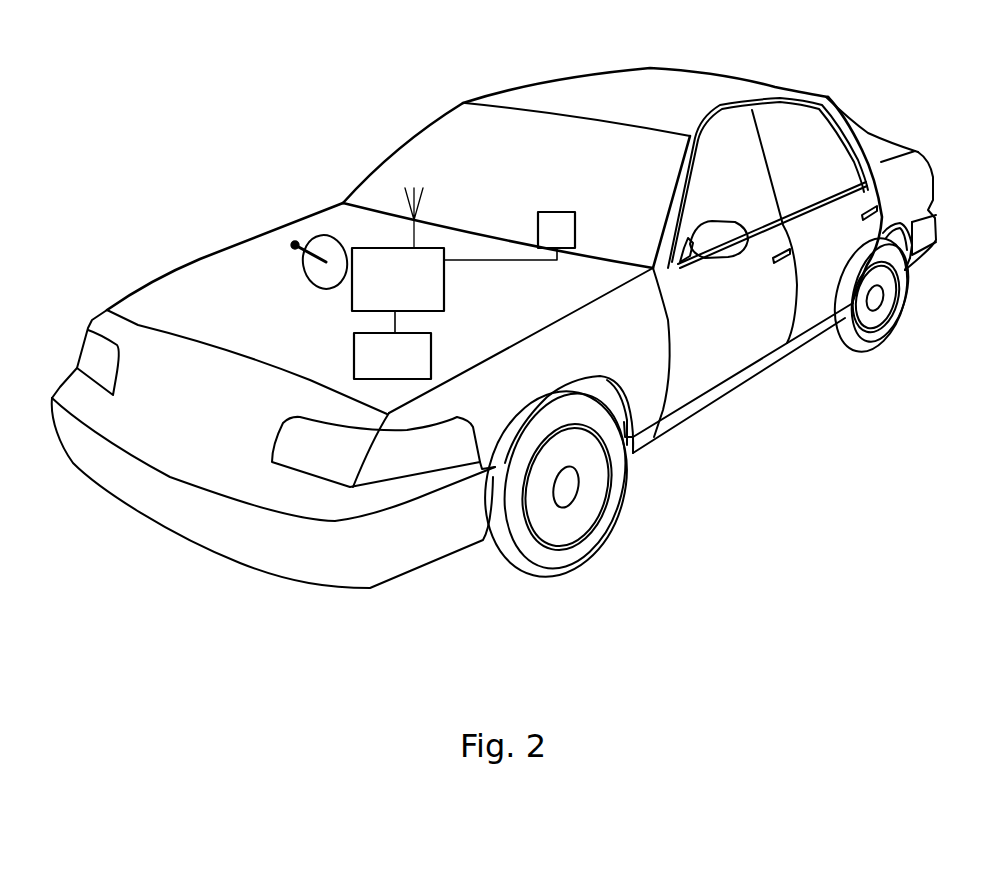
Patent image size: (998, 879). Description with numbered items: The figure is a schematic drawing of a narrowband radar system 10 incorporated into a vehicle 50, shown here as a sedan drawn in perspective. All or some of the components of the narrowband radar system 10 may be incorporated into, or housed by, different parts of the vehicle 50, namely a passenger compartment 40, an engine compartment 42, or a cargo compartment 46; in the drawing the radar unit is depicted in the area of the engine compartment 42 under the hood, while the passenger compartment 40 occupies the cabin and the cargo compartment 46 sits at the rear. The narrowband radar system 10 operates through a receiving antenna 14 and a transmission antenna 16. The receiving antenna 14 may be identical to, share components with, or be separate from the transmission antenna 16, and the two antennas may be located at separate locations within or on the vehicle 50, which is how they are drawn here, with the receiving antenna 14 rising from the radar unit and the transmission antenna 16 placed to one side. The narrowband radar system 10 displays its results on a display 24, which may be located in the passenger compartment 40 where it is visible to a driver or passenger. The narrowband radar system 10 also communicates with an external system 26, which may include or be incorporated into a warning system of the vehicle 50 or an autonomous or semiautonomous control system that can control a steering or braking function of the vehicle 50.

The narrowband radar system 10 is at (337, 306).
The receiving antenna 14 is at (418, 208).
The transmission antenna 16 is at (313, 240).
The display 24 is at (538, 228).
The external system 26 is at (433, 352).
The passenger compartment 40 is at (573, 68).
The engine compartment 42 is at (212, 278).
The cargo compartment 46 is at (876, 133).
The vehicle 50 is at (313, 120).